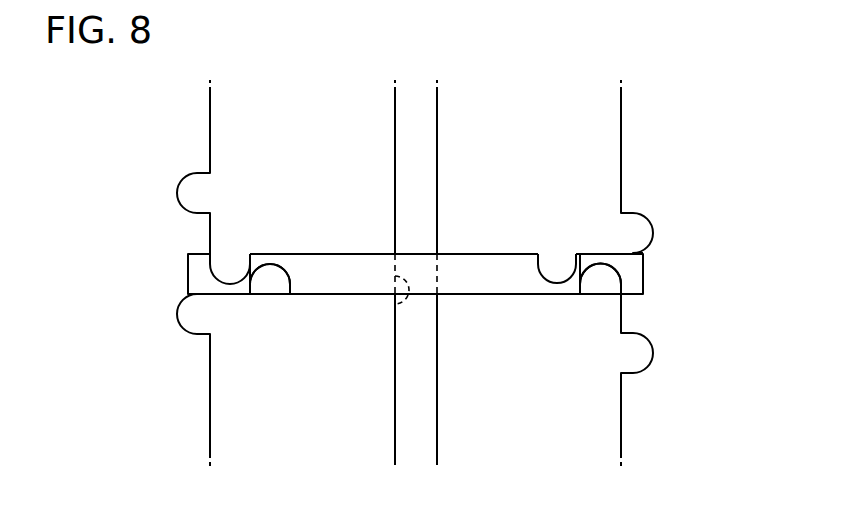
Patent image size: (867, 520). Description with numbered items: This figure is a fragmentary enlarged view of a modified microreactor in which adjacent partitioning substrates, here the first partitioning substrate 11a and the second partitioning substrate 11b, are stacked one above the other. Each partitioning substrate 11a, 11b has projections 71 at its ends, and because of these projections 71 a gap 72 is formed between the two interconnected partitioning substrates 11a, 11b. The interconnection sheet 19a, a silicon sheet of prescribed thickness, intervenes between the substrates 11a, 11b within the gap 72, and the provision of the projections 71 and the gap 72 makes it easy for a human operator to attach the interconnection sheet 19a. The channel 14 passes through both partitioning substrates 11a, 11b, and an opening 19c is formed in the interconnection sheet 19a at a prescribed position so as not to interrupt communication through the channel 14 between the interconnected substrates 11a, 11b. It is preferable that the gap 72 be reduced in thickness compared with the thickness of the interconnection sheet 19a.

The first partitioning substrate 11a is at (622, 415).
The second partitioning substrate 11b is at (622, 152).
The channel 14 is at (437, 170).
The interconnection sheet 19a is at (643, 273).
The opening 19c is at (399, 303).
The projection 71 is at (272, 261).
The gap 72 is at (477, 253).